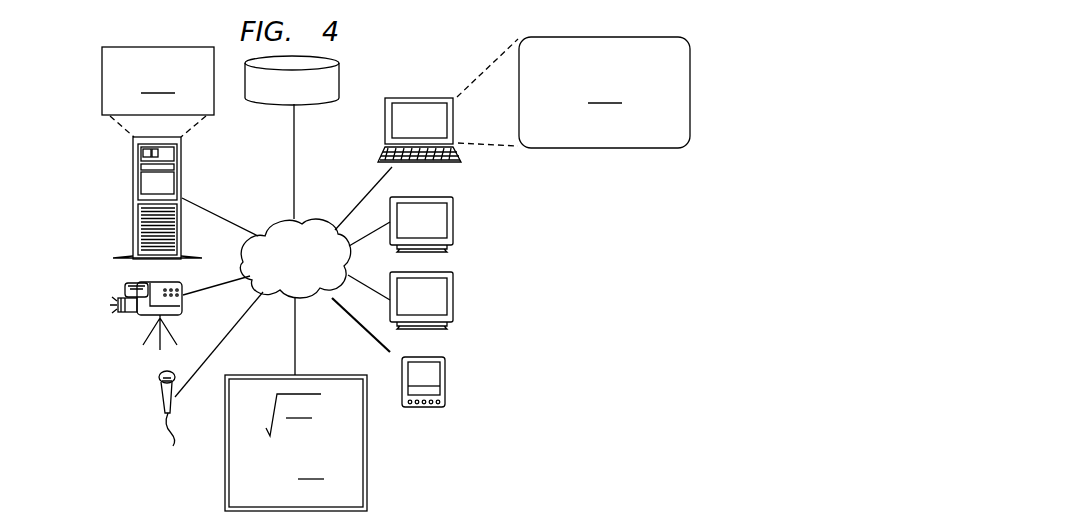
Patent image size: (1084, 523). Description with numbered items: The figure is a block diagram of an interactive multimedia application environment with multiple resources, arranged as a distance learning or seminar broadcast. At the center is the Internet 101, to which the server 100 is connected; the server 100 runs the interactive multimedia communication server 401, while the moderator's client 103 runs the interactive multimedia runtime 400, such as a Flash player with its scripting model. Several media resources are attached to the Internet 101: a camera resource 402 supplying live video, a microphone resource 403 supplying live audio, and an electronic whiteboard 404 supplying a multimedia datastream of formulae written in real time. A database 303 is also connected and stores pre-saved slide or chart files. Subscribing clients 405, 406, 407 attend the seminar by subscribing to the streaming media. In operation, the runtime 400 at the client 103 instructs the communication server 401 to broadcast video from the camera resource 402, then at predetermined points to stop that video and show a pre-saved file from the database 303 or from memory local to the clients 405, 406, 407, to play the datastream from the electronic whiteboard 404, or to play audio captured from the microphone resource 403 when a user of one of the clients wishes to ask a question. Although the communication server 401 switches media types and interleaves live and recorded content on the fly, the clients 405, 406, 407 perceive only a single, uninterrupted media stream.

The server 100 is at (133, 207).
The Internet 101 is at (279, 221).
The client 103 is at (457, 151).
The database 303 is at (319, 106).
The interactive multimedia runtime (iMR) 400 is at (604, 92).
The interactive multimedia communication server (iMCS) 401 is at (158, 92).
The camera resource 402 is at (132, 320).
The microphone resource 403 is at (161, 397).
The electronic whiteboard 404 is at (367, 440).
The client 405 is at (454, 222).
The client 406 is at (454, 300).
The client 407 is at (446, 380).